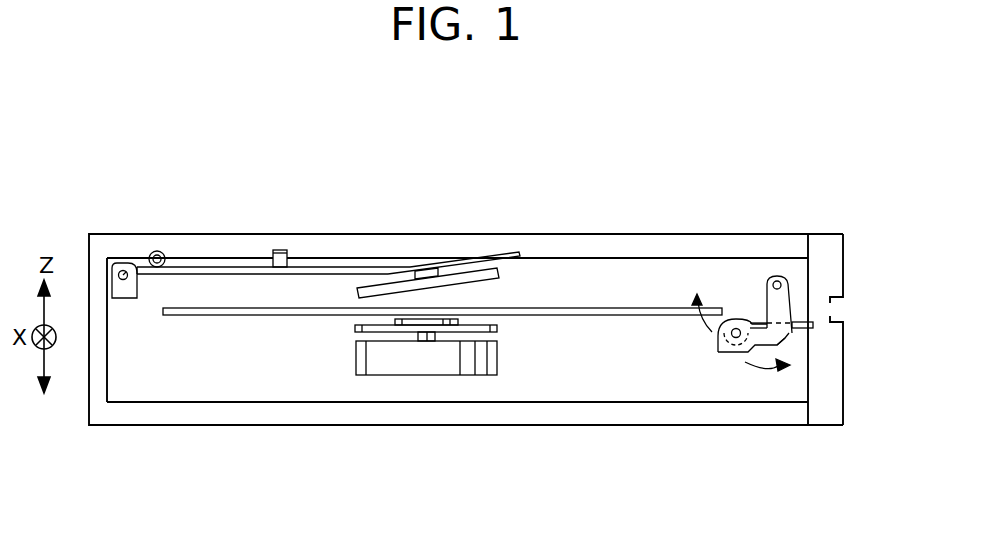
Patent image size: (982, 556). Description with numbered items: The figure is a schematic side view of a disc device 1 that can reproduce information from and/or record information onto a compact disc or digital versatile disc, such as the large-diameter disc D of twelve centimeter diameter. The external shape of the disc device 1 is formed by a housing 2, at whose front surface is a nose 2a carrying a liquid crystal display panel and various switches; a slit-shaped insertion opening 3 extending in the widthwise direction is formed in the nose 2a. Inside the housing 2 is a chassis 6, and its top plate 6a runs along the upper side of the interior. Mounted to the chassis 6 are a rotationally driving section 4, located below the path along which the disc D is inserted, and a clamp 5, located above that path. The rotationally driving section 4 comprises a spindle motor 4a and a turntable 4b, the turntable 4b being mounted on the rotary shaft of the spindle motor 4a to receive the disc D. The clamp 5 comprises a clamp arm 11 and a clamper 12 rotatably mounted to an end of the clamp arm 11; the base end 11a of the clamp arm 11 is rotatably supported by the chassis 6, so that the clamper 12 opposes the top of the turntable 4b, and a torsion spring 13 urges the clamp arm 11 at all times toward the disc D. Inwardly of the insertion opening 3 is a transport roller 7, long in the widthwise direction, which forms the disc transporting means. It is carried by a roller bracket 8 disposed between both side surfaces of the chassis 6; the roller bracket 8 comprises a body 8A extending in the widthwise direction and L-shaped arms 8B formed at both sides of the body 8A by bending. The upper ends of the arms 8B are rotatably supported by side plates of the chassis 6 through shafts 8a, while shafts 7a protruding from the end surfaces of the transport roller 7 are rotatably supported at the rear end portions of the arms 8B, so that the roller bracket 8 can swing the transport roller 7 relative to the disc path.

The disc device 1 is at (699, 206).
The housing 2 is at (680, 427).
The nose 2a is at (825, 419).
The insertion opening 3 is at (840, 304).
The rotationally driving section 4 is at (388, 387).
The spindle motor 4a is at (482, 357).
The turntable 4b is at (355, 329).
The clamp 5 is at (343, 256).
The chassis 6 is at (518, 414).
The top plate 6a is at (578, 257).
The transport roller 7 is at (741, 319).
The shaft 7a is at (738, 341).
The roller bracket 8 is at (803, 342).
The shaft 8a is at (778, 280).
The body 8A is at (794, 322).
The L-shaped arm 8B is at (789, 347).
The clamp arm 11 is at (228, 266).
The base end 11a is at (119, 262).
The clamper 12 is at (487, 273).
The torsion spring 13 is at (156, 250).
The large-diameter disc D is at (630, 307).